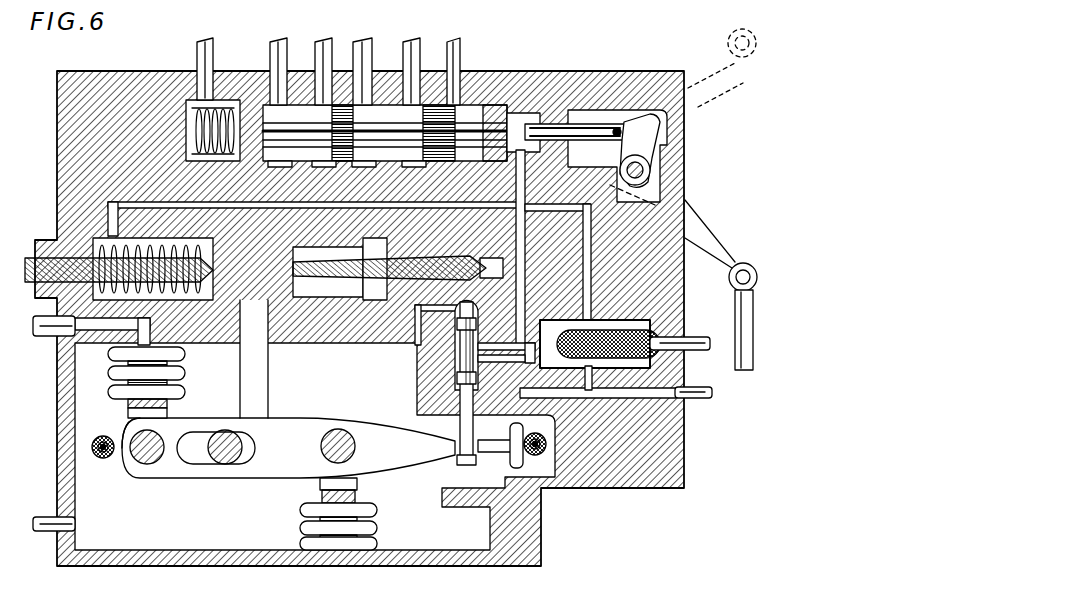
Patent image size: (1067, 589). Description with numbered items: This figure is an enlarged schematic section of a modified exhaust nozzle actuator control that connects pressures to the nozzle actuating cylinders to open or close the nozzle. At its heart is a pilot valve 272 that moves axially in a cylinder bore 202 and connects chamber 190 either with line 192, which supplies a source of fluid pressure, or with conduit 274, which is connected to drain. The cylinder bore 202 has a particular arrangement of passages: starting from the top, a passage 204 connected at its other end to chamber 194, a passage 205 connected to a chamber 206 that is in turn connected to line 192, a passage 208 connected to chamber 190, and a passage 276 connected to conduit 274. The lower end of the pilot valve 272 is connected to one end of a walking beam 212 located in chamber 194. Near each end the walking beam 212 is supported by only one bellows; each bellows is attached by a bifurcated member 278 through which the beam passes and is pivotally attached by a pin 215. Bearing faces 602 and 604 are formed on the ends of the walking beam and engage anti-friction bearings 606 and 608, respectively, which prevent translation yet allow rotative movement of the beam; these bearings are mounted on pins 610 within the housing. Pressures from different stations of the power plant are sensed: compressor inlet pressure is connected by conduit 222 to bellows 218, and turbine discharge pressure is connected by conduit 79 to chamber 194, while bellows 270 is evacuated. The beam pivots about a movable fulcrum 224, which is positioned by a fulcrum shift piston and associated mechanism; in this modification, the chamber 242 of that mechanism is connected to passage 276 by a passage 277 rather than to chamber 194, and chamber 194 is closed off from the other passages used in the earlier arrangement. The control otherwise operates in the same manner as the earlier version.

The conduit 79 is at (52, 516).
The chamber 190 is at (530, 118).
The line 192 is at (700, 348).
The chamber 194 is at (205, 536).
The cylinder bore 202 is at (450, 338).
The passage 204 is at (440, 330).
The passage 205 is at (480, 350).
The chamber 206 is at (625, 322).
The passage 208 is at (490, 380).
The walking beam 212 is at (283, 420).
The pin 215 is at (148, 464).
The bellows 218 is at (182, 374).
The conduit 222 is at (52, 338).
The movable fulcrum 224 is at (225, 464).
The chamber 242 is at (100, 247).
The bellows 270 is at (378, 526).
The pilot valve 272 is at (458, 432).
The conduit 274 is at (710, 393).
The passage 276 is at (680, 396).
The passage 277 is at (110, 205).
The bifurcated member 278 is at (135, 413).
The bearing face 602 is at (125, 480).
The bearing face 604 is at (522, 450).
The anti-friction bearing 606 is at (95, 445).
The anti-friction bearing 608 is at (540, 454).
The pin 610 is at (97, 452).